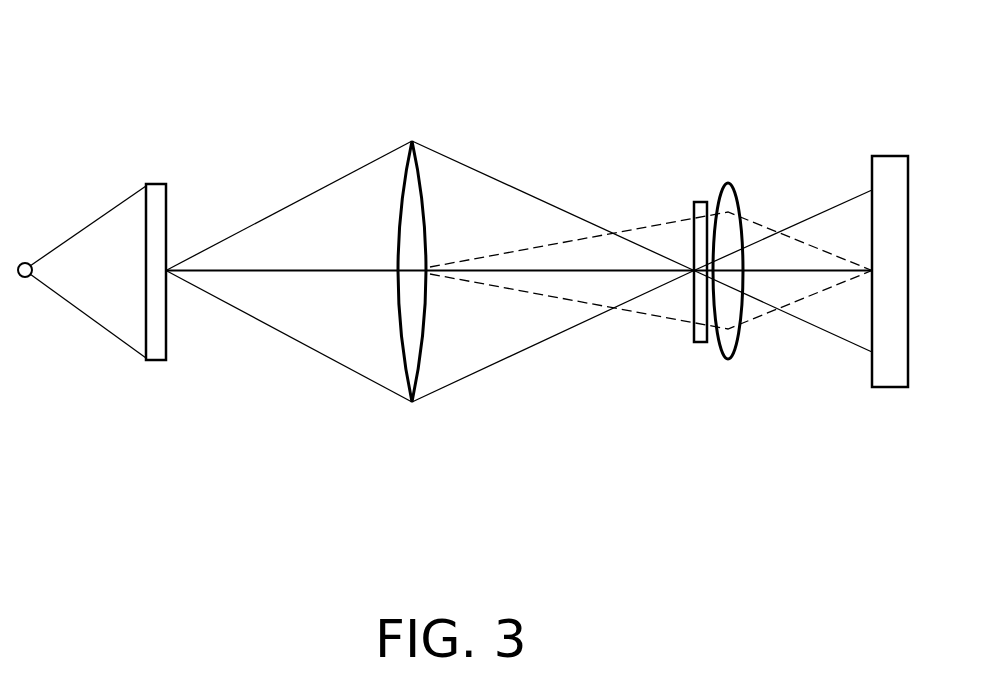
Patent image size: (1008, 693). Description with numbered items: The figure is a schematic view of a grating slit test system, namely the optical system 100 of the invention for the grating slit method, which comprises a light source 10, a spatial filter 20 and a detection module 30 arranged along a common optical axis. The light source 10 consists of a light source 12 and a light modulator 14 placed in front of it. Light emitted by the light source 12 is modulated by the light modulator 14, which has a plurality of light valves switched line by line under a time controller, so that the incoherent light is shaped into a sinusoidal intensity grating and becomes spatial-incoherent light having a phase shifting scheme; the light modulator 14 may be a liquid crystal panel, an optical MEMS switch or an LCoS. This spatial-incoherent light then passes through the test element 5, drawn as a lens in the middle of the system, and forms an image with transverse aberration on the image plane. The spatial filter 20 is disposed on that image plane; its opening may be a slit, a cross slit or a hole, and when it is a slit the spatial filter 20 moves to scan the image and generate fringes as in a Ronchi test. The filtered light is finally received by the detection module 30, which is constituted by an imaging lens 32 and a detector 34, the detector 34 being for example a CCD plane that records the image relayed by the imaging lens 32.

The optical system 100 is at (73, 53).
The light source 10 is at (90, 331).
The light source 12 is at (21, 277).
The light modulator 14 is at (159, 308).
The test element 5 is at (410, 393).
The spatial filter 20 is at (698, 338).
The detection module 30 is at (807, 329).
The imaging lens 32 is at (727, 350).
The detector 34 is at (890, 306).